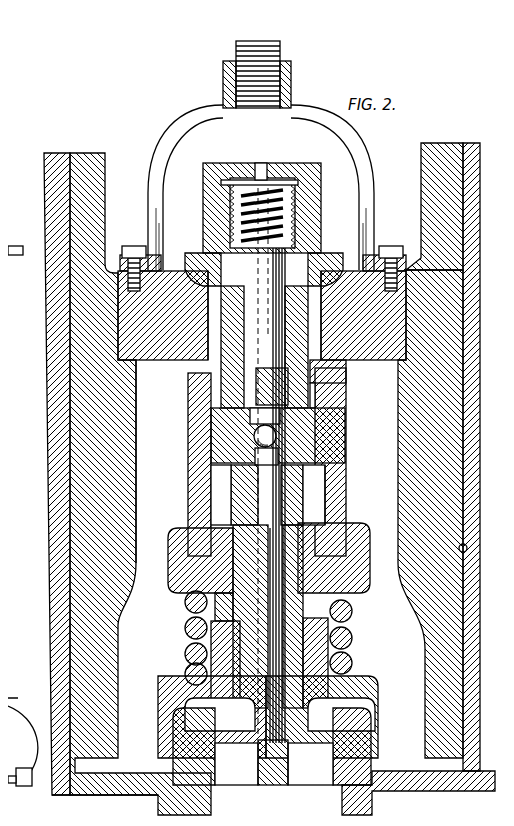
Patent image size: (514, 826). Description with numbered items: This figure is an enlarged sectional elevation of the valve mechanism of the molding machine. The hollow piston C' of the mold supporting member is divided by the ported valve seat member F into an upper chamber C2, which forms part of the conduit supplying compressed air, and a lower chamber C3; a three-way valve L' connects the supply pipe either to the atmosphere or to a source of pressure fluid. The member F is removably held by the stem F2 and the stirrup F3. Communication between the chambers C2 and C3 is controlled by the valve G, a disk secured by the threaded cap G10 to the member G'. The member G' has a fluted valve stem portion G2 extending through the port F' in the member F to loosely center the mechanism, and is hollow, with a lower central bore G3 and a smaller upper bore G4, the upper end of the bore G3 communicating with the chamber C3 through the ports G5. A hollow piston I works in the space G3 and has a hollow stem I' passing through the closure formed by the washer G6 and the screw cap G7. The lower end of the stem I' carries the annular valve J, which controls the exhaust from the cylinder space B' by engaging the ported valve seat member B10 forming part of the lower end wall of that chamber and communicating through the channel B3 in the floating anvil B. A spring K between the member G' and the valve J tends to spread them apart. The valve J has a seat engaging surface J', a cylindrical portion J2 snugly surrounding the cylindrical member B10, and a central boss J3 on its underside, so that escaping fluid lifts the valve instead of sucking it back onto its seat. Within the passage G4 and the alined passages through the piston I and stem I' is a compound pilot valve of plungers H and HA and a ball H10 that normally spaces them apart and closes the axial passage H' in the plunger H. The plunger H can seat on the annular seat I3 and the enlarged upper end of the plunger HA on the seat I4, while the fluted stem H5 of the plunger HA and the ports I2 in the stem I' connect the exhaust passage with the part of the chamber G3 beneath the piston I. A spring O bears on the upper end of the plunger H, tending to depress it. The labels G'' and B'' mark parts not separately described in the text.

The stem F2 is at (228, 45).
The stirrup F3 is at (157, 121).
The three-way valve L' is at (15, 237).
The spring O is at (247, 172).
The stem G'' is at (273, 155).
The threaded cap G10 is at (197, 192).
The valve G is at (260, 224).
The plunger H is at (298, 465).
The upper chamber C2 is at (421, 206).
The ported valve seat member F is at (212, 303).
The port F' is at (169, 321).
The piston C' is at (113, 484).
The lower chamber C3 is at (140, 458).
The upper communicating bore G4 is at (213, 350).
The axial passage H' is at (247, 462).
The ball H10 is at (210, 430).
The ports I2 is at (247, 447).
The lower central bore G3 is at (223, 480).
The valve seat I4 is at (210, 492).
The member G' is at (258, 550).
The fluted valve stem portion G2 is at (318, 362).
The ports G5 is at (305, 386).
The annular valve seat I3 is at (270, 437).
The hollow piston I is at (288, 435).
The plunger HA is at (320, 462).
The stem portion H5 is at (263, 541).
The floating anvil B is at (452, 457).
The chamber B' is at (482, 547).
The screw cap G7 is at (172, 580).
The washer G6 is at (177, 606).
The valve J is at (264, 702).
The seat engaging surface J' is at (249, 676).
The cylindrical portion J2 is at (163, 733).
The central boss J3 is at (274, 764).
The ported valve seat member B10 is at (150, 783).
The base block B'' is at (265, 780).
The channel B3 is at (399, 795).
The hollow stem I' is at (350, 637).
The spring K is at (345, 625).